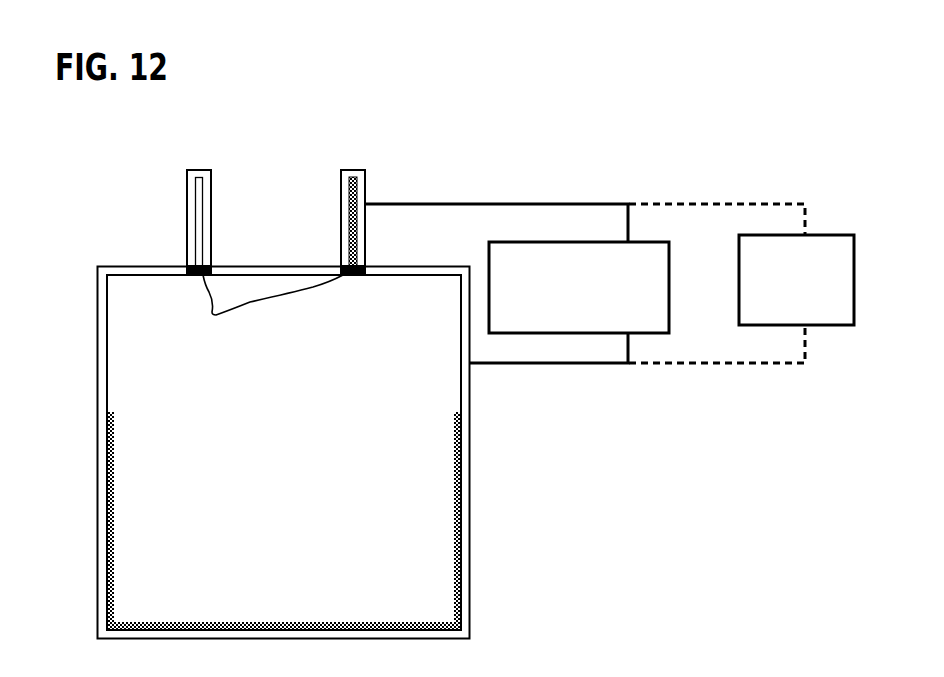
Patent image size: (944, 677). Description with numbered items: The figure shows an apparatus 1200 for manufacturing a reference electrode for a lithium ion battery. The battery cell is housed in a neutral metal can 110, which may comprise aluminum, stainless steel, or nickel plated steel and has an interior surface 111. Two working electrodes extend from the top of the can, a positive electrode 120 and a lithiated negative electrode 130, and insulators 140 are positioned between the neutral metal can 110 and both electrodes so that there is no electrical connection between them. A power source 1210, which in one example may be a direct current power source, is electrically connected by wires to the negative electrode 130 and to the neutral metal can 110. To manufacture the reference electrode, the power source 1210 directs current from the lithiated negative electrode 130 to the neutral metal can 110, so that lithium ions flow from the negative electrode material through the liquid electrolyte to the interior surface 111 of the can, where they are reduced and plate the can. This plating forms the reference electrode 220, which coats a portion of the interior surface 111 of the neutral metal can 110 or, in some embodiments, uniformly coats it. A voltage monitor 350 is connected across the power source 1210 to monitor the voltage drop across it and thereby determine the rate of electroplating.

The apparatus 1200 is at (177, 148).
The neutral metal can 110 is at (470, 533).
The interior surface 111 is at (107, 375).
The positive electrode 120 is at (186, 213).
The negative electrode 130 is at (340, 213).
The insulators 140 is at (269, 309).
The reference electrode 220 is at (454, 438).
The power source 1210 is at (579, 287).
The voltage monitor 350 is at (796, 280).